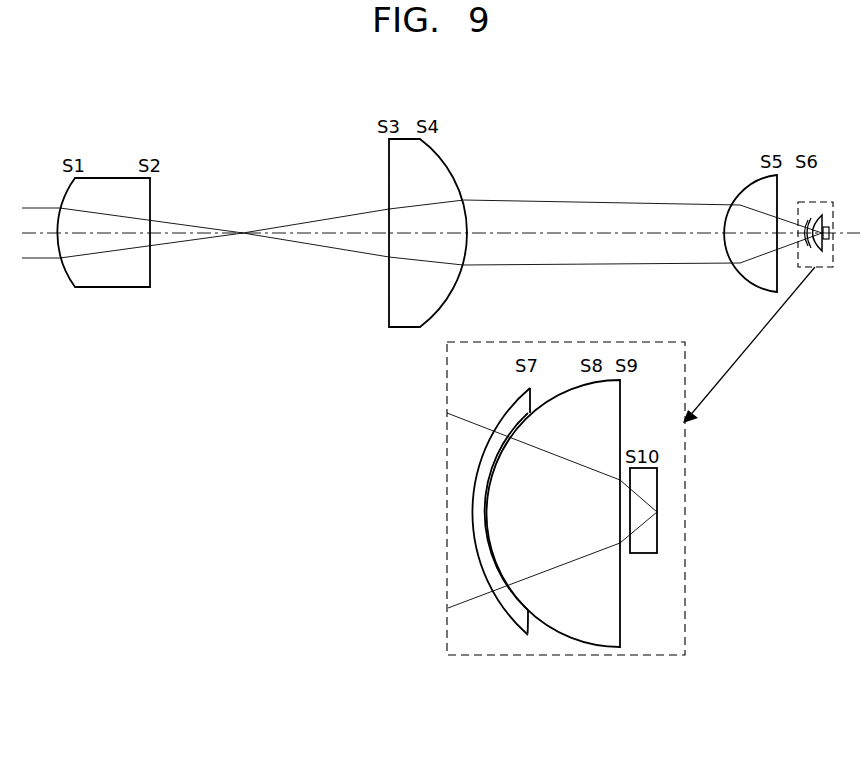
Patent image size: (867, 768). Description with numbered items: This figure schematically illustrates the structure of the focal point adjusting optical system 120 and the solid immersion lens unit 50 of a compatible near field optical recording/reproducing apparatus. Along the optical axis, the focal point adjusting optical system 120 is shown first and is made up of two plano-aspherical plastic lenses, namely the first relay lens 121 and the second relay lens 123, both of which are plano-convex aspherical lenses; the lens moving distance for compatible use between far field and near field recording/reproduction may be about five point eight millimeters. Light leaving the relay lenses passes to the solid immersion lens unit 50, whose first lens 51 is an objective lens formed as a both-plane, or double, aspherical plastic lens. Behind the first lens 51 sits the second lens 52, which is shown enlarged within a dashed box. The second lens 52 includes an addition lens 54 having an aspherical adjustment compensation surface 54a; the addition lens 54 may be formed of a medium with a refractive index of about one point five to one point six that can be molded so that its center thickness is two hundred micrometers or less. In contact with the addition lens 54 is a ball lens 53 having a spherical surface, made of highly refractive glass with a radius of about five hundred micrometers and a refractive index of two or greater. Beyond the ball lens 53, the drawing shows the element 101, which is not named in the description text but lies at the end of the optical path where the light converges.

The solid immersion lens unit 50 is at (751, 219).
The first lens 51 is at (757, 275).
The second lens 52 is at (500, 561).
The ball lens 53 is at (583, 624).
The addition lens 54 is at (456, 547).
The adjustment compensation surface 54a is at (474, 511).
The image sensor 101 is at (645, 554).
The focal point adjusting optical system 120 is at (262, 284).
The first relay lens 121 is at (115, 286).
The second relay lens 123 is at (406, 264).